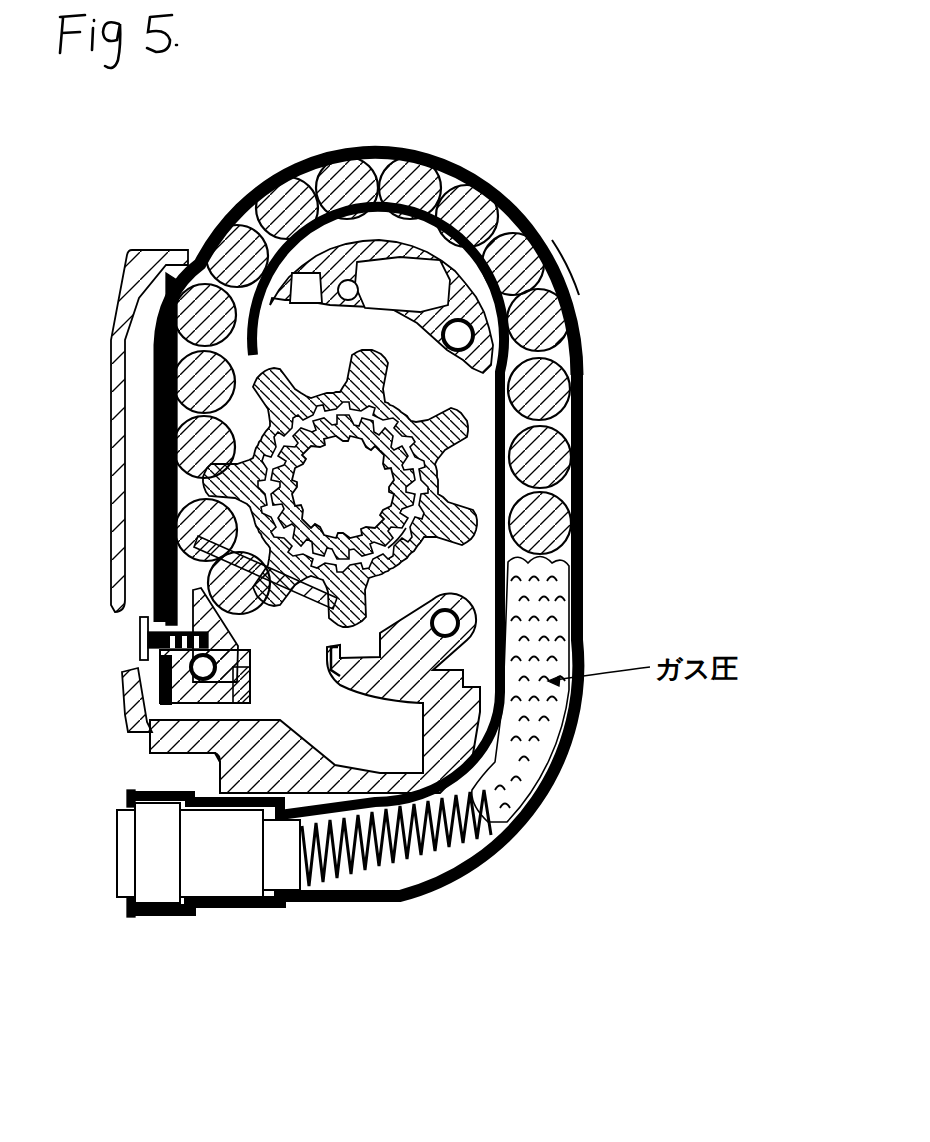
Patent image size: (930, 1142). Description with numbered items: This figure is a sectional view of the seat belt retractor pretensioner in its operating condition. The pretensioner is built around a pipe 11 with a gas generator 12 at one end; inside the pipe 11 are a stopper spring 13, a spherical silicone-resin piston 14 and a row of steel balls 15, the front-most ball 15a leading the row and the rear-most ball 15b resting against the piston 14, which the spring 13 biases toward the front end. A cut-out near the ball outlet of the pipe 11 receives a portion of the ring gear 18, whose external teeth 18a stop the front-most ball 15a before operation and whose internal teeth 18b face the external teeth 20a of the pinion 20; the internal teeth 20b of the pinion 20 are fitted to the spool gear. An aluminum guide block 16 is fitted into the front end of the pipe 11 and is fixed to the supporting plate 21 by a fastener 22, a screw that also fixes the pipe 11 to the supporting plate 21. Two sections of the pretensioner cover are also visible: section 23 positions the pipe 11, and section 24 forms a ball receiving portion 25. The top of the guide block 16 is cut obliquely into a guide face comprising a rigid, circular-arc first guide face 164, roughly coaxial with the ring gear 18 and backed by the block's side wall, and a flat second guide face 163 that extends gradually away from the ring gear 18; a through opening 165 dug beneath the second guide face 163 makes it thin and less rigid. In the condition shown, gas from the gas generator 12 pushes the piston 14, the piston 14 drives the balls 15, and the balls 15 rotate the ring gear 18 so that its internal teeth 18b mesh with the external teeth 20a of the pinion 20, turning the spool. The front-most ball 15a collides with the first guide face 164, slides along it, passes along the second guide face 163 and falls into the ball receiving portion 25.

The pipe 11 is at (540, 228).
The gas generator 12 is at (210, 880).
The stopper spring 13 is at (366, 898).
The piston 14 is at (567, 523).
The balls 15 is at (508, 258).
The front-most ball 15a is at (232, 580).
The rear-most ball 15b is at (545, 456).
The guide block 16 is at (142, 747).
The ring gear 18 is at (317, 587).
The external teeth 18a is at (156, 484).
The internal teeth 18b is at (330, 393).
The pinion 20 is at (392, 420).
The external teeth 20a is at (410, 540).
The internal teeth 20b is at (368, 450).
The supporting plate 21 is at (150, 532).
The fastener 22 is at (140, 645).
The section 23 is at (578, 283).
The section 24 is at (133, 720).
The ball receiving portion 25 is at (218, 780).
The second guide face 163 is at (238, 652).
The first guide face 164 is at (190, 547).
The through opening 165 is at (248, 680).